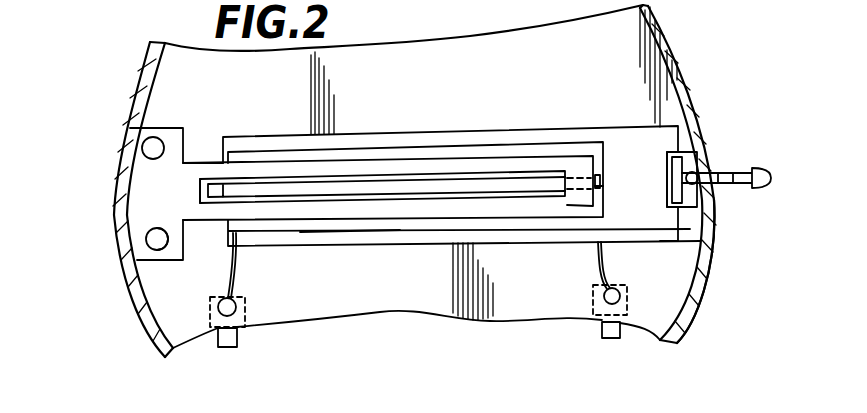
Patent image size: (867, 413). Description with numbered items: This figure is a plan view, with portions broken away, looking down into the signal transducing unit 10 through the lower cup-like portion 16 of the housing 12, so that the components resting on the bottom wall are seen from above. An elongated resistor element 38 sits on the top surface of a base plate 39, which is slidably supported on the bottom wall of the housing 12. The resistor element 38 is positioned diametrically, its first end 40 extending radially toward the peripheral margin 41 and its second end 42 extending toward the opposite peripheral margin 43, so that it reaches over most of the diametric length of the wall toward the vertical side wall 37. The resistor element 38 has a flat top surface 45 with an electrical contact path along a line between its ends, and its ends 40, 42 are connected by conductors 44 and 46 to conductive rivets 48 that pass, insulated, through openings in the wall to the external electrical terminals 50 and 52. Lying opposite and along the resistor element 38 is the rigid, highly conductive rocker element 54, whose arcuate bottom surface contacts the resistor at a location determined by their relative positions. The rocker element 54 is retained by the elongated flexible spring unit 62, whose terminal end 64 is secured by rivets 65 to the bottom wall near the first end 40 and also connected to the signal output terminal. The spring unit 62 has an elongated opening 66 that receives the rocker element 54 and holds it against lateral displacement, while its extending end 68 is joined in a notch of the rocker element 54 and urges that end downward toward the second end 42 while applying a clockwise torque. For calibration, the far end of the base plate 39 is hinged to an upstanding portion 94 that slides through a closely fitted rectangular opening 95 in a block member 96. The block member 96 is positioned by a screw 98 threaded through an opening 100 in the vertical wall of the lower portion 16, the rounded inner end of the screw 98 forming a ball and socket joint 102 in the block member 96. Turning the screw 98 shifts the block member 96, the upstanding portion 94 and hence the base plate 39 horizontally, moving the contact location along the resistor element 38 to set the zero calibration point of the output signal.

The signal transducing unit 10 is at (704, 37).
The housing 12 is at (704, 77).
The lower cup-like portion 16 is at (707, 280).
The vertical side wall 37 is at (130, 133).
The resistor element 38 is at (357, 157).
The base plate 39 is at (627, 232).
The first end of resistor element 40 is at (277, 157).
The peripheral margin 41 is at (120, 240).
The second end of resistor element 42 is at (587, 143).
The opposite peripheral margin / electrical contact path 43 is at (722, 216).
The conductor 44 is at (226, 276).
The flat top surface 45 is at (347, 226).
The conductor 46 is at (597, 258).
The conductive rivets 48 is at (236, 303).
The external electrical terminal 50 is at (226, 348).
The external electrical terminal 52 is at (602, 329).
The rocker element 54 is at (440, 187).
The spring unit 62 is at (516, 163).
The terminal end of spring unit 64 is at (137, 182).
The rivets 65 is at (151, 137).
The elongated opening 66 is at (198, 191).
The extending end of spring unit 68 is at (589, 168).
The upstanding portion 94 is at (668, 175).
The rectangular opening 95 is at (667, 242).
The block member 96 is at (696, 153).
The screw 98 is at (739, 173).
The opening 100 is at (699, 184).
The ball and socket joint 102 is at (603, 186).